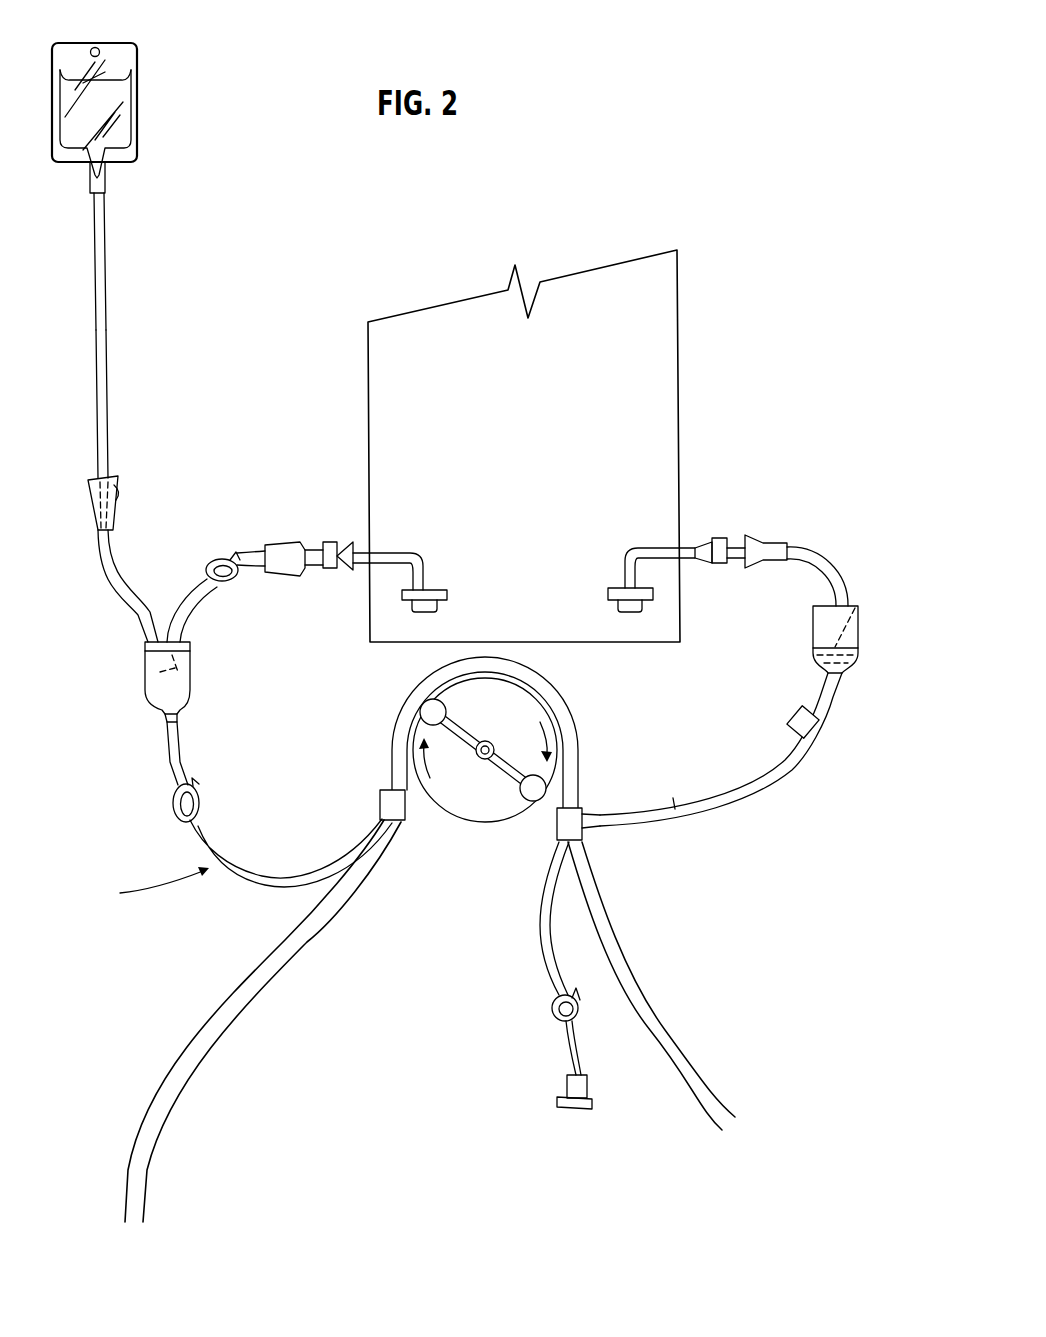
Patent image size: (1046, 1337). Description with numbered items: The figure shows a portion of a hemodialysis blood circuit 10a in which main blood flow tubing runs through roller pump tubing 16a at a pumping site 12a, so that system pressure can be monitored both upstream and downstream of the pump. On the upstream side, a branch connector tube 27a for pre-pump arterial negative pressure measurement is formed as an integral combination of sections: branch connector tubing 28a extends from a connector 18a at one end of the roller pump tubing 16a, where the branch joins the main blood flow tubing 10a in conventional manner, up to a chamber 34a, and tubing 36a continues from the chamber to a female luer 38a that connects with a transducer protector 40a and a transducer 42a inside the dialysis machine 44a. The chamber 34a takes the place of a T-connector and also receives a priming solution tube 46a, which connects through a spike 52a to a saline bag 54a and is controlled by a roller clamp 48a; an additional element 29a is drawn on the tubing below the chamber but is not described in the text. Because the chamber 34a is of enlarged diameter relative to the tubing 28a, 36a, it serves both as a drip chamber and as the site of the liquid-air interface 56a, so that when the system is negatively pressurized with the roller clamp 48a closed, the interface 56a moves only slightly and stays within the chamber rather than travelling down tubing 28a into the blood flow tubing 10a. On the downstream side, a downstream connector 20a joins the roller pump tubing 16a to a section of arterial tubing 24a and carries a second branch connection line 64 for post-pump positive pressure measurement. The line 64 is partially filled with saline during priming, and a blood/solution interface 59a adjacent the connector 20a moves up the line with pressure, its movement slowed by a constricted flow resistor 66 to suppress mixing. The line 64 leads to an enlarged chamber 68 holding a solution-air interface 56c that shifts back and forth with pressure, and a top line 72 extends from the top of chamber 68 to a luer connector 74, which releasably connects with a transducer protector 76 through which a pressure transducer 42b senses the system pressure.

The saline bag 54a is at (130, 132).
The spike 52a is at (105, 240).
The priming solution tube 46a is at (105, 378).
The roller clamp 48a is at (115, 480).
The tubing 36a is at (188, 592).
The female luer 38a is at (285, 545).
The transducer protector 40a is at (330, 572).
The liquid-air interface 56a is at (178, 672).
The chamber 34a is at (182, 688).
The clamp 29a is at (172, 800).
The branch connector tube 27a is at (143, 887).
The branch connector tubing 28a is at (255, 885).
The connector 18a is at (380, 803).
The roller pump tubing 16a is at (573, 722).
The pumping site 12a is at (485, 786).
The dialysis machine 44a is at (532, 439).
The transducer 42a is at (415, 612).
The pressure transducer 42b is at (623, 612).
The transducer protector 76 is at (720, 540).
The luer connector 74 is at (762, 548).
The top line 72 is at (808, 553).
The solution-air interface level 56c is at (858, 603).
The enlarged chamber 68 is at (812, 632).
The constricted flow resistor 66 is at (805, 742).
The second branch connection line 64 is at (762, 770).
The blood/solution interface 59a is at (676, 806).
The downstream connector 20a is at (585, 830).
The arterial tubing 24a is at (652, 990).
The dialysis blood flow circuit 10a is at (283, 968).